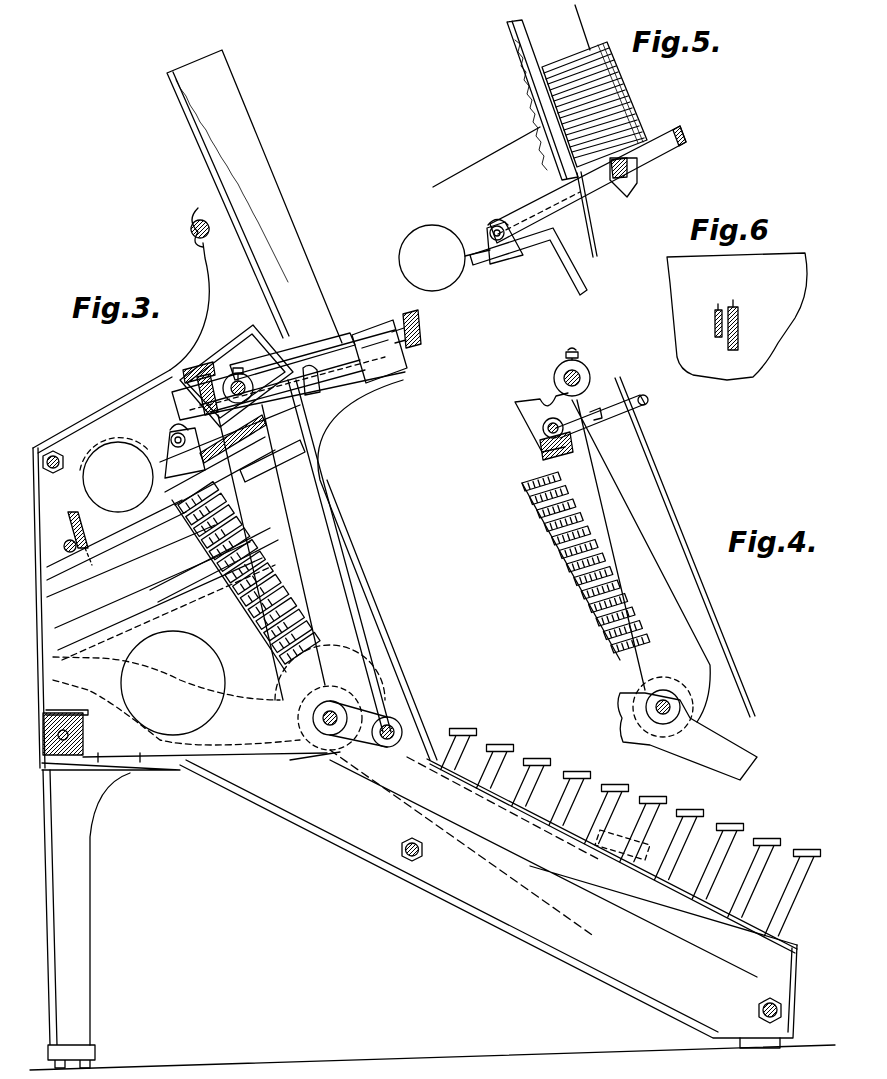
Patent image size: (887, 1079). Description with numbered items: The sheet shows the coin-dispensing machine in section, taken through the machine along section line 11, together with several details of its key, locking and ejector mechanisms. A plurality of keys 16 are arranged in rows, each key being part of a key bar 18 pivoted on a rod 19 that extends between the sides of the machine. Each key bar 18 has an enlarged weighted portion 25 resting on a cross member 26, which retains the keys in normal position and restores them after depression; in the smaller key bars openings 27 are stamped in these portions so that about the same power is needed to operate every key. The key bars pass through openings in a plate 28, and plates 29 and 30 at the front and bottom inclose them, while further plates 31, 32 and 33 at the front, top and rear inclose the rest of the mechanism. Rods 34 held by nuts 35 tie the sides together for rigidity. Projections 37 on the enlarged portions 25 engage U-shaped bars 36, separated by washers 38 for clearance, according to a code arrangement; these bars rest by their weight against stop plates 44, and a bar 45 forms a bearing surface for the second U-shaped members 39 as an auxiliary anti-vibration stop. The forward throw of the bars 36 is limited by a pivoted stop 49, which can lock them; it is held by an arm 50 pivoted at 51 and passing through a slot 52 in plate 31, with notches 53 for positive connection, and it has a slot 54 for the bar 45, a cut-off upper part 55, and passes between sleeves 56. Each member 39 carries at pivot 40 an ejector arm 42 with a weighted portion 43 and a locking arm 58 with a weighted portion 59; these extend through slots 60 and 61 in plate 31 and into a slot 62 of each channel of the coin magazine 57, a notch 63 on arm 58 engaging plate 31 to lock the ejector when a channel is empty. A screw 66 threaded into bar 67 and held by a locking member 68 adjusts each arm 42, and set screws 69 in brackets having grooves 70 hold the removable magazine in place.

In FIG. 3, the section line 11 is at (226, 455).
In FIG. 3, the key 16 is at (468, 728).
In FIG. 3, the key bar 18 is at (710, 940).
In FIG. 4, the key bar 18 is at (687, 736).
In FIG. 3, the rod 19 is at (340, 712).
In FIG. 4, the rod 19 is at (672, 705).
In FIG. 3, the enlarged portion 25 is at (150, 763).
In FIG. 3, the member 26 is at (43, 722).
In FIG. 3, the opening 27 is at (215, 688).
In FIG. 3, the plate 28 is at (700, 890).
In FIG. 3, the plate 29 is at (797, 960).
In FIG. 3, the plate 30 is at (490, 916).
In FIG. 3, the plate 31 is at (372, 572).
In FIG. 5, the plate 31 is at (596, 240).
In FIG. 6, the plate 31 is at (757, 262).
In FIG. 4, the plate 31 is at (665, 490).
In FIG. 3, the plate 32 is at (110, 412).
In FIG. 3, the plate 33 is at (25, 597).
In FIG. 3, the rod 34 is at (68, 450).
In FIG. 3, the nut 35 is at (401, 848).
In FIG. 3, the U-shaped bar 36 is at (330, 672).
In FIG. 4, the U-shaped bar 36 is at (588, 615).
In FIG. 3, the projection 37 is at (212, 578).
In FIG. 4, the washer 38 is at (646, 707).
In FIG. 3, the second U-shaped member 39 is at (300, 565).
In FIG. 5, the second U-shaped member 39 is at (570, 268).
In FIG. 4, the second U-shaped member 39 is at (560, 555).
In FIG. 3, the pivot 40 is at (175, 432).
In FIG. 5, the pivot 40 is at (493, 226).
In FIG. 5, the arm 42 is at (528, 215).
In FIG. 6, the arm 42 is at (719, 306).
In FIG. 3, the weighted portion 43 is at (116, 475).
In FIG. 5, the weighted portion 43 is at (450, 290).
In FIG. 3, the plate 44 is at (300, 708).
In FIG. 3, the bar 45 is at (224, 450).
In FIG. 3, the pivoted stop 49 is at (271, 552).
In FIG. 4, the pivoted stop 49 is at (632, 545).
In FIG. 3, the arm 50 is at (322, 444).
In FIG. 4, the arm 50 is at (612, 420).
In FIG. 4, the pivot 51 is at (543, 428).
In FIG. 4, the slot 52 is at (630, 395).
In FIG. 4, the notch 53 is at (648, 400).
In FIG. 4, the slot 54 is at (570, 455).
In FIG. 4, the cut-off upper part 55 is at (536, 392).
In FIG. 3, the sleeve 56 is at (231, 377).
In FIG. 4, the sleeve 56 is at (588, 372).
In FIG. 3, the coin magazine 57 is at (254, 196).
In FIG. 5, the coin magazine 57 is at (548, 92).
In FIG. 5, the locking arm 58 is at (635, 185).
In FIG. 6, the locking arm 58 is at (735, 304).
In FIG. 3, the weighted portion 59 is at (161, 580).
In FIG. 5, the slot 60 is at (540, 114).
In FIG. 6, the slot 60 is at (715, 326).
In FIG. 6, the slot 61 is at (738, 330).
In FIG. 3, the slot 62 is at (347, 393).
In FIG. 5, the notch 63 is at (642, 170).
In FIG. 3, the screw 66 is at (196, 394).
In FIG. 3, the bar 67 is at (180, 383).
In FIG. 3, the locking member 68 is at (198, 360).
In FIG. 3, the set screw 69 is at (410, 314).
In FIG. 3, the groove 70 is at (405, 372).